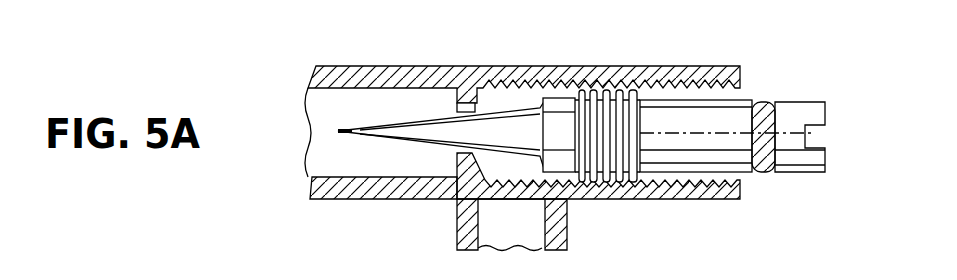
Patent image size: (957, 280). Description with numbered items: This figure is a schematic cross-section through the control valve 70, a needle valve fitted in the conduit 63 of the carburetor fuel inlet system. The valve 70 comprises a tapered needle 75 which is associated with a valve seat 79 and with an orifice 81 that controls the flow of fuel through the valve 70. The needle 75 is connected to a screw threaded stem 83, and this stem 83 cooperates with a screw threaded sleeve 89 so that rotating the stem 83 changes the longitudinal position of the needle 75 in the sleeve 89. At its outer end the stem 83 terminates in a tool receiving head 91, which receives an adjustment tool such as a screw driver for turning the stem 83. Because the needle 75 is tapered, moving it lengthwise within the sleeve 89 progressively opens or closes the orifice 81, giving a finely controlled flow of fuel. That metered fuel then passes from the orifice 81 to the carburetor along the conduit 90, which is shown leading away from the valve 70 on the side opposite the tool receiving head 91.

The control valve 70 is at (345, 40).
The needle 75 is at (380, 127).
The valve seat 79 is at (494, 106).
The screw threaded stem 83 is at (600, 95).
The tool receiving head 91 is at (784, 102).
The conduit 90 is at (345, 200).
The conduit 63 is at (460, 222).
The orifice 81 is at (512, 203).
The screw threaded sleeve 89 is at (669, 202).